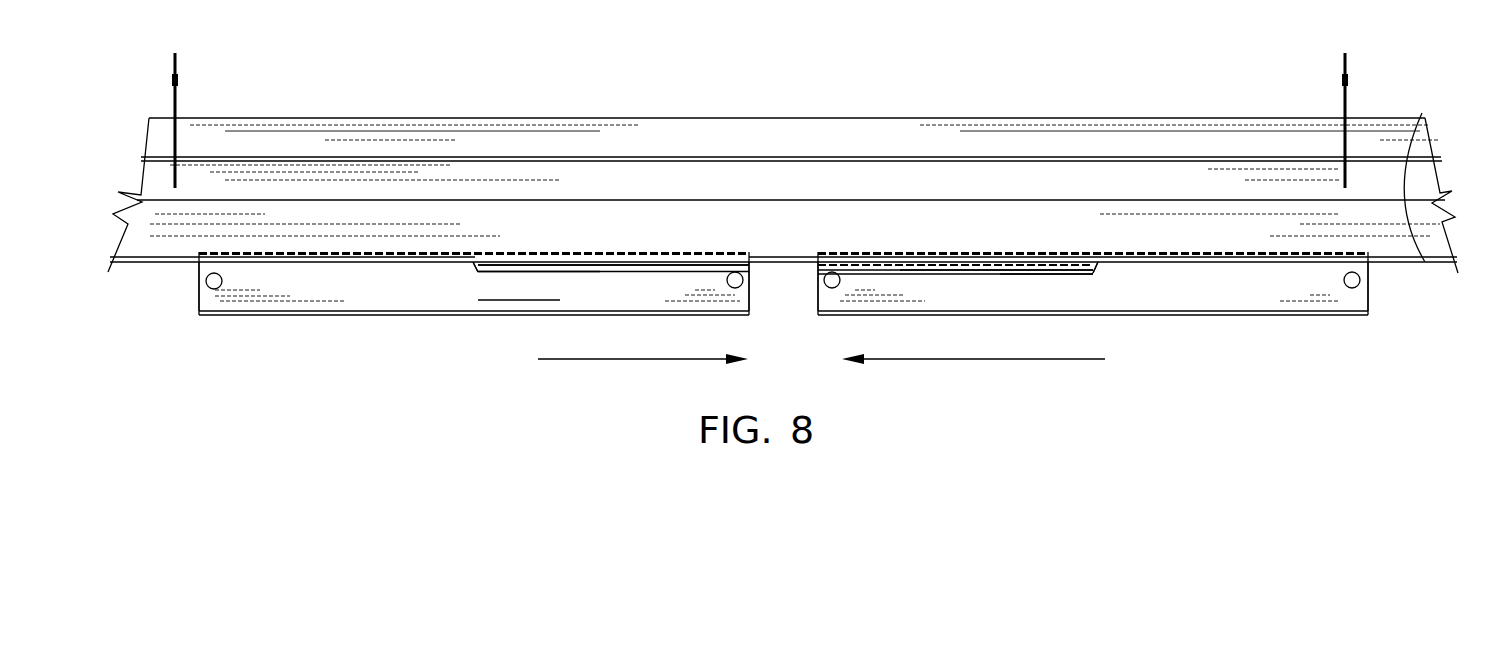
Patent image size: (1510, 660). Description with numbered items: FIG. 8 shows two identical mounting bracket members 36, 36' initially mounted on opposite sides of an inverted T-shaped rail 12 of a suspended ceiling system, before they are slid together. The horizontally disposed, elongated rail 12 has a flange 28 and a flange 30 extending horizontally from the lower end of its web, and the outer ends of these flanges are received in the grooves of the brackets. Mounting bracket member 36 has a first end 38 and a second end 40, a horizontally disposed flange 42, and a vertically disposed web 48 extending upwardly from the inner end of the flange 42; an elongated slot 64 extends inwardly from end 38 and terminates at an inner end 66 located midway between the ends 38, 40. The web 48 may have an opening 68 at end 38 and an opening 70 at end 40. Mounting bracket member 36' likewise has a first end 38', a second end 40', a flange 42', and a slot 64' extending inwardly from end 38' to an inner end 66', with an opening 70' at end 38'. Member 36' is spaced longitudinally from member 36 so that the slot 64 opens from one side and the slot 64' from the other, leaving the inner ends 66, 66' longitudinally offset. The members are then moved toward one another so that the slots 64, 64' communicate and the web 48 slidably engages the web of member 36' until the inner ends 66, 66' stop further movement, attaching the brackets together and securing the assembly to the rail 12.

The inverted T-shaped rail 12 is at (813, 128).
The flange 28 is at (1422, 113).
The flange 30 is at (153, 262).
The mounting bracket member 36 is at (470, 207).
The mounting bracket member 36' is at (1136, 223).
The first end 38 is at (775, 328).
The first end 38' is at (851, 333).
The second end 40 is at (169, 325).
The second end 40' is at (1418, 319).
The flange 42 is at (474, 354).
The flange 42' is at (1093, 363).
The web 48 is at (522, 297).
The slot 64 is at (613, 134).
The slot 64' is at (996, 157).
The inner end 66 is at (490, 143).
The inner end 66' is at (1086, 152).
The opening 68 is at (728, 285).
The opening 70 is at (210, 337).
The opening 70' is at (1371, 336).